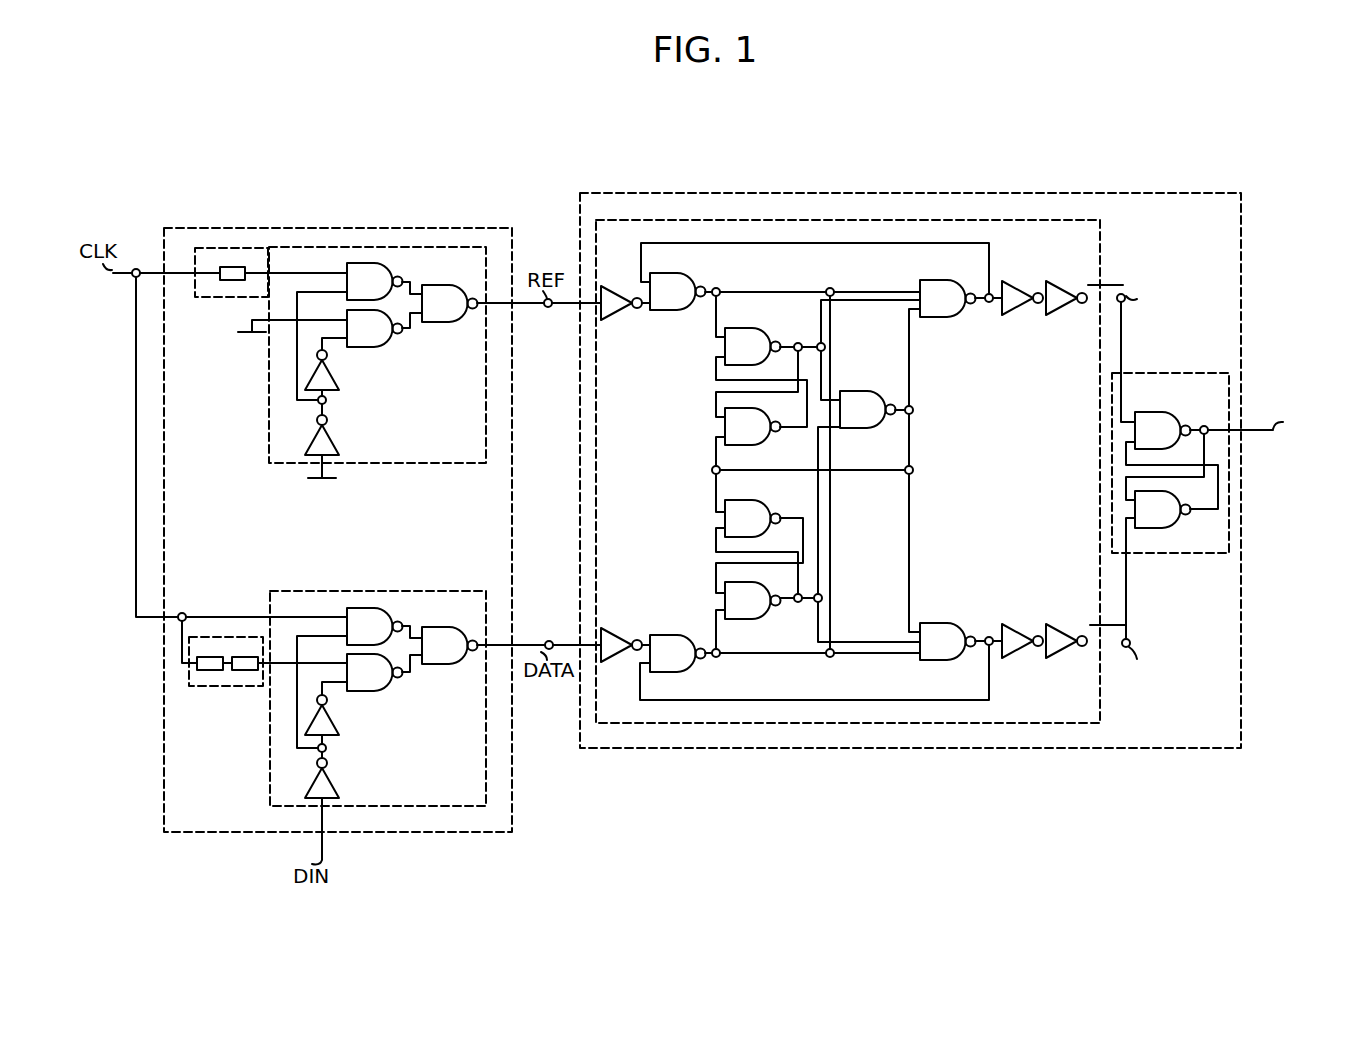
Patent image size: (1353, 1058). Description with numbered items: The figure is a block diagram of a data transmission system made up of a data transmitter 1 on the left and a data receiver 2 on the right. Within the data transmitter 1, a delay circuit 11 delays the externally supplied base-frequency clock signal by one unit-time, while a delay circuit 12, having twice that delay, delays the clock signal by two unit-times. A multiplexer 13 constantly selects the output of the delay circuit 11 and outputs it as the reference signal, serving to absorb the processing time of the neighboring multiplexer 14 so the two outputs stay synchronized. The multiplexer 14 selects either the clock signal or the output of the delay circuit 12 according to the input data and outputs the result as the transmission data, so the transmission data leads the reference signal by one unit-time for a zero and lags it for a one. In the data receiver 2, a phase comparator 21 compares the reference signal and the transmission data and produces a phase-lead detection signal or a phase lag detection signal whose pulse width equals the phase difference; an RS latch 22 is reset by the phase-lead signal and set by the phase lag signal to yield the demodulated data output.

The data transmitter 1 is at (511, 228).
The data receiver 2 is at (1241, 193).
The delay circuit 11 is at (232, 247).
The delay circuit 12 is at (243, 686).
The multiplexer 13 is at (396, 247).
The multiplexer 14 is at (417, 807).
The phase comparator 21 is at (1099, 220).
The RS latch 22 is at (1229, 373).